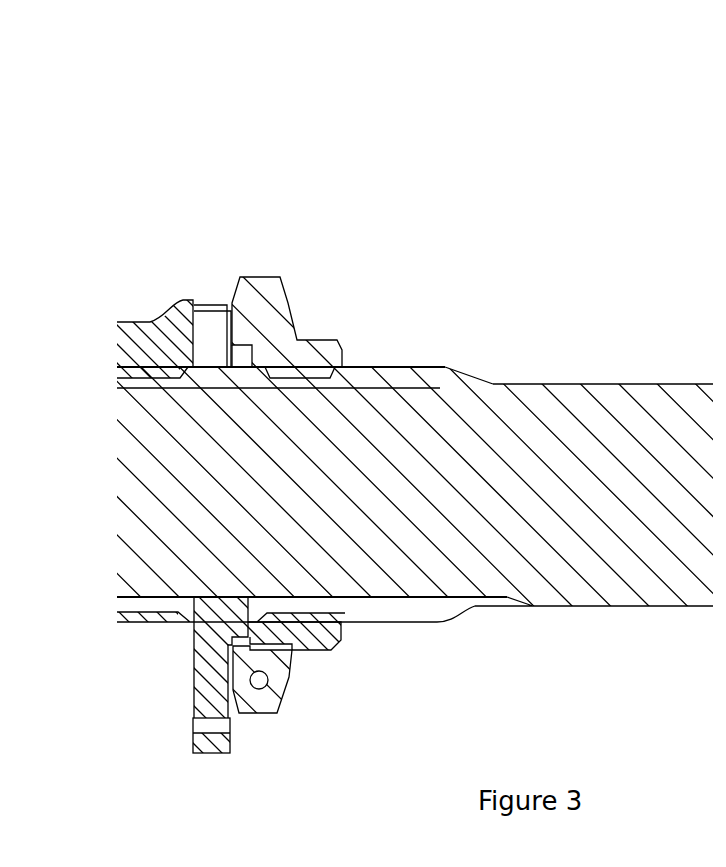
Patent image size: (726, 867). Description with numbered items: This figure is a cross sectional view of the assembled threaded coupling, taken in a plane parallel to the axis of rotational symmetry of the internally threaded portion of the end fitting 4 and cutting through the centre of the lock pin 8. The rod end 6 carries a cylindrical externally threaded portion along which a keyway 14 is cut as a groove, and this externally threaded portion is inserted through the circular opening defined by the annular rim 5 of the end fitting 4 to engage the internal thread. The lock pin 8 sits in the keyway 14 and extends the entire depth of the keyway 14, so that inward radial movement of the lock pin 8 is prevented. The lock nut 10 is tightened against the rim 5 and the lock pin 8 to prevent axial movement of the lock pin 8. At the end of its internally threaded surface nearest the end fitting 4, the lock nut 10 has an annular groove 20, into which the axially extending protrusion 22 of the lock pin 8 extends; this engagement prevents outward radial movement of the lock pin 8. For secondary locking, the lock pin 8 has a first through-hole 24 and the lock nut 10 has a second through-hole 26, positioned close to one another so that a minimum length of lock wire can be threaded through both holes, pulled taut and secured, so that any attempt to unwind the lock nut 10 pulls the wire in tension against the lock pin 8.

The end fitting 4 is at (152, 335).
The annular rim 5 is at (210, 327).
The rod end 6 is at (393, 445).
The lock pin 8 is at (212, 645).
The lock nut 10 is at (265, 285).
The keyway 14 is at (408, 598).
The annular groove 20 is at (253, 341).
The axially extending protrusion 22 is at (248, 623).
The first through-hole 24 is at (212, 728).
The second through-hole 26 is at (267, 688).